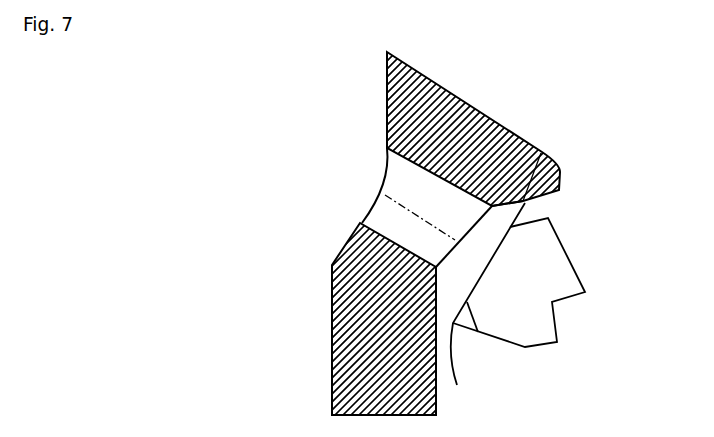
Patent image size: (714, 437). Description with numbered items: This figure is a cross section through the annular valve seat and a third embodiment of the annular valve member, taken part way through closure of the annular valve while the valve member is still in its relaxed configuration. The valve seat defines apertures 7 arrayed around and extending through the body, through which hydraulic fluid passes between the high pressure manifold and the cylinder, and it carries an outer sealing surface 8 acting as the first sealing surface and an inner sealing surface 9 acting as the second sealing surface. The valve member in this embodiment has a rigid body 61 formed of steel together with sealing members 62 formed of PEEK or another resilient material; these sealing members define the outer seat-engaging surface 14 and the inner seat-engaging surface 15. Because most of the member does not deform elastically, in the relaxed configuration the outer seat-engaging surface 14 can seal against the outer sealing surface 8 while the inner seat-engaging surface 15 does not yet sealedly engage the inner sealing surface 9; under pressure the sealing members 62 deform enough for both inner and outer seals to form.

The apertures 7 is at (400, 207).
The outer sealing surface 8 is at (541, 153).
The inner sealing surface 9 is at (437, 312).
The outer seat-engaging surface 14 is at (525, 202).
The inner seat-engaging surface 15 is at (488, 305).
The rigid body 61 is at (556, 278).
The sealing members 62 is at (470, 325).